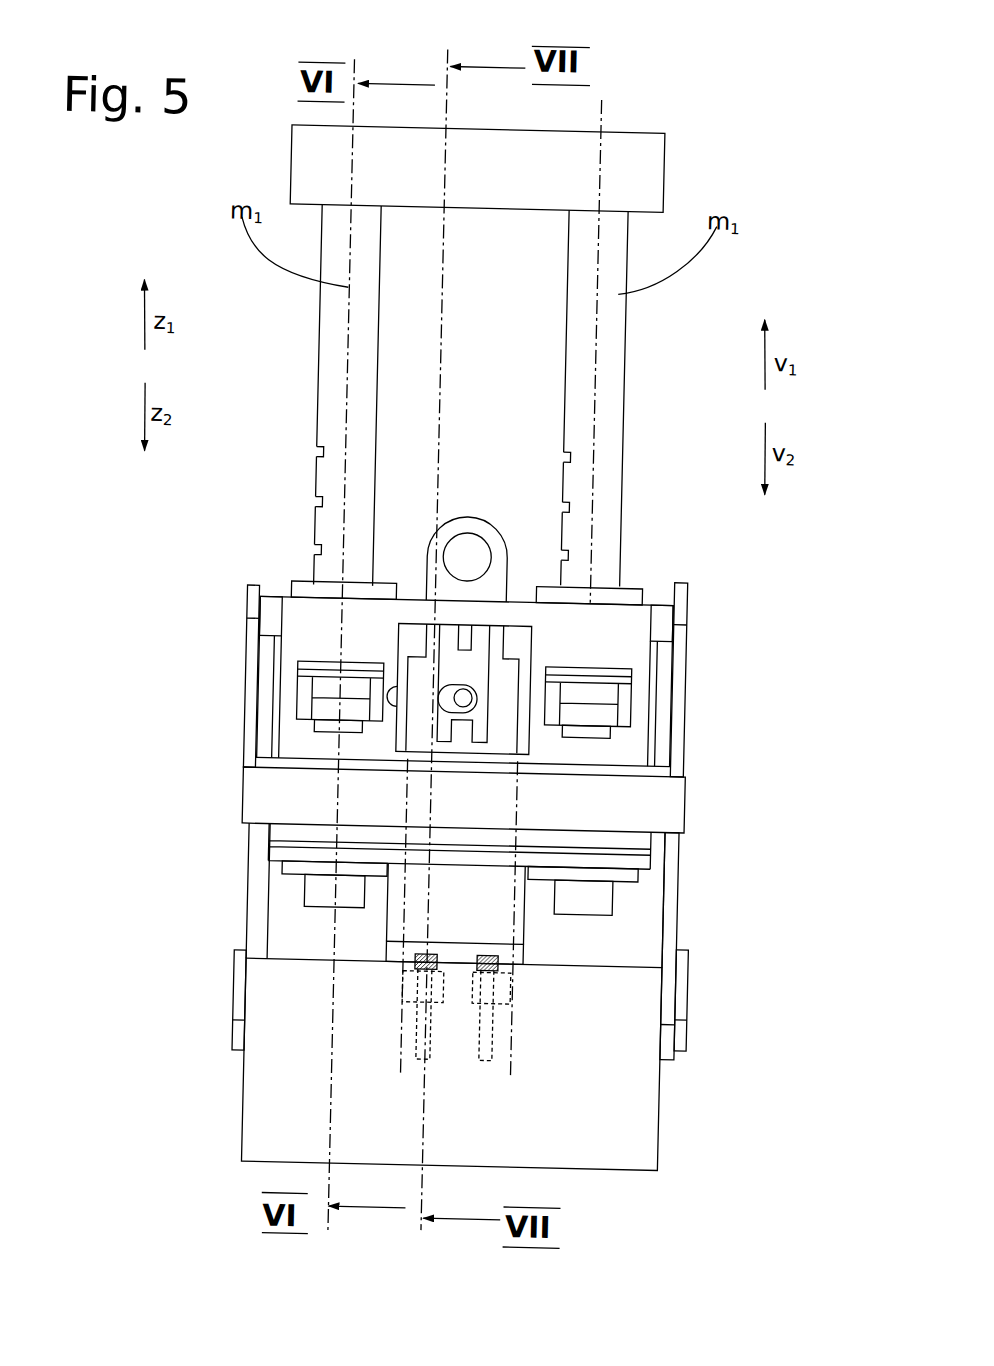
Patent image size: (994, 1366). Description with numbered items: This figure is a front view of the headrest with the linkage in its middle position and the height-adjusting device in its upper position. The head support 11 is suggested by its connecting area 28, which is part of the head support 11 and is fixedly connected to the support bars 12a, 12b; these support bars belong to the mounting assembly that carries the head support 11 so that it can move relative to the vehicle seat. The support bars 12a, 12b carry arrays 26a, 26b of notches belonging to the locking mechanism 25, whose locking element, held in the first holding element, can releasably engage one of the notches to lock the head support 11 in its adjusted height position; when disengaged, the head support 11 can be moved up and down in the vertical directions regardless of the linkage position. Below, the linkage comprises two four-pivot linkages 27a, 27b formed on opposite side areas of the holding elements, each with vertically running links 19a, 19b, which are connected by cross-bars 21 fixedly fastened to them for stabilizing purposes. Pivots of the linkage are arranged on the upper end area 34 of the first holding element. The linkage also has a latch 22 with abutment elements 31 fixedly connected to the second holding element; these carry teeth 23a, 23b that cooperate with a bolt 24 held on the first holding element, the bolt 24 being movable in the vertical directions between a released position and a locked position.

The head support 11 is at (629, 159).
The support bar 12a is at (331, 408).
The support bar 12b is at (596, 385).
The link 19a is at (253, 950).
The link 19b is at (678, 978).
The cross-bar 21 is at (652, 806).
The latch 22 is at (418, 973).
The tooth 23a is at (449, 978).
The tooth 23b is at (513, 982).
The bolt 24 is at (458, 527).
The locking mechanism 25 is at (301, 746).
The array of notches 26a is at (293, 514).
The array of notches 26b is at (546, 501).
The four-pivot linkage 27a is at (232, 673).
The four-pivot linkage 27b is at (697, 711).
The connecting area 28 is at (595, 149).
The abutment element 31 is at (418, 1041).
The upper end area 34 is at (598, 603).